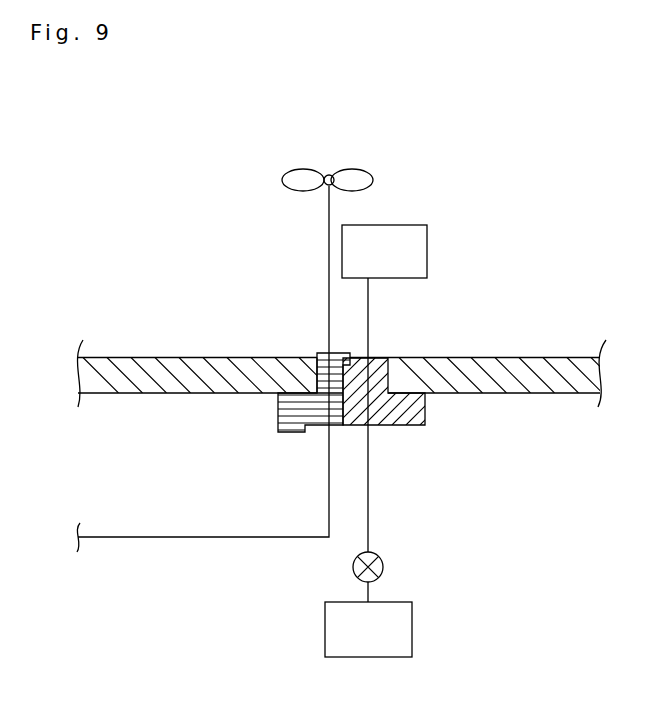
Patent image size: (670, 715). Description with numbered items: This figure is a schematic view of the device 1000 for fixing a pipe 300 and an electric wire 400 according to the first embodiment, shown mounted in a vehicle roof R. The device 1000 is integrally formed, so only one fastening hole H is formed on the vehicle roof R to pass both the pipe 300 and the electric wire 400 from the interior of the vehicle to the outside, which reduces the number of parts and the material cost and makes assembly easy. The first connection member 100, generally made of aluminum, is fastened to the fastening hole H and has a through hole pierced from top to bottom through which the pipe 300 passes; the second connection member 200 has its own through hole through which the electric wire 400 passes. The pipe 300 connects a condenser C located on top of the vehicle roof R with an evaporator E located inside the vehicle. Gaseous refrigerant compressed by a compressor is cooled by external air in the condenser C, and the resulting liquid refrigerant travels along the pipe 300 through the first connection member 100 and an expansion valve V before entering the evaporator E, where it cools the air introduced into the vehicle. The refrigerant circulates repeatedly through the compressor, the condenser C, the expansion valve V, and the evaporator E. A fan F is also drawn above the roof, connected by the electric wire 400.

The device for fixing a pipe and an electric wire 1000 is at (389, 382).
The first connection member 100 is at (410, 409).
The second connection member 200 is at (315, 427).
The pipe 300 is at (368, 513).
The electric wire 400 is at (203, 538).
The vehicle roof R is at (152, 372).
The fastening hole H is at (313, 375).
The fan F is at (301, 176).
The condenser C is at (384, 251).
The expansion valve V is at (383, 567).
The evaporator E is at (368, 629).